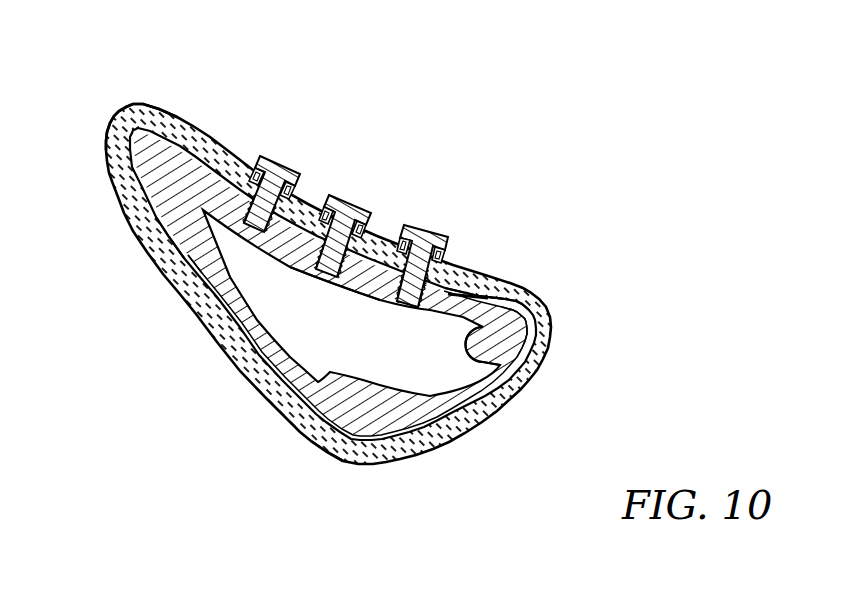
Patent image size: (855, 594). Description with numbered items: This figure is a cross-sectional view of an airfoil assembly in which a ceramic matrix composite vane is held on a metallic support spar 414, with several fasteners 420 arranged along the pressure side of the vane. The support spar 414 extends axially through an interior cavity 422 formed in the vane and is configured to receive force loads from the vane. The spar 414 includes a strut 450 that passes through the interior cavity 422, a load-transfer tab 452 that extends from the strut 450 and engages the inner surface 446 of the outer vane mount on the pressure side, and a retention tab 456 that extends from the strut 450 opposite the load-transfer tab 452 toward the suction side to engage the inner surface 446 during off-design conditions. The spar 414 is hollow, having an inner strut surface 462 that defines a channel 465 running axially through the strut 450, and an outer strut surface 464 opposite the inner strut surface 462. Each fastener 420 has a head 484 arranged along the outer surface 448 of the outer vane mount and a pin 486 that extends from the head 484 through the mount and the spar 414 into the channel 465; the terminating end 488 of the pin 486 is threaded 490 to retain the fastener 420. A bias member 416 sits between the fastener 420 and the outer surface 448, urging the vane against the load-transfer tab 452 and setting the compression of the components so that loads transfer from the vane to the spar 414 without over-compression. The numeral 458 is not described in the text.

The metallic support spar 414 is at (270, 374).
The bias member 416 is at (240, 158).
The fastener 420 is at (333, 182).
The interior cavity 422 is at (170, 143).
The inner surface 446 is at (455, 297).
The outer surface 448 is at (458, 294).
The strut 450 is at (250, 343).
The load-transfer tab 452 is at (518, 332).
The retention tab 456 is at (176, 272).
The bottom wall 458 is at (338, 430).
The inner strut surface 462 is at (495, 372).
The outer strut surface 464 is at (496, 306).
The channel 465 is at (404, 358).
The head 484 is at (360, 199).
The pin 486 is at (290, 267).
The terminating end 488 is at (326, 288).
The threads 490 is at (292, 266).